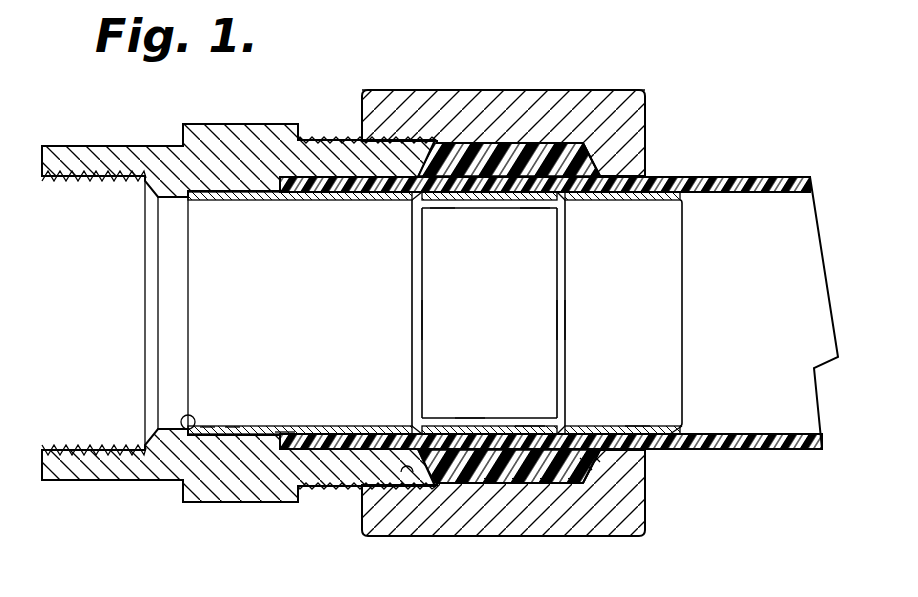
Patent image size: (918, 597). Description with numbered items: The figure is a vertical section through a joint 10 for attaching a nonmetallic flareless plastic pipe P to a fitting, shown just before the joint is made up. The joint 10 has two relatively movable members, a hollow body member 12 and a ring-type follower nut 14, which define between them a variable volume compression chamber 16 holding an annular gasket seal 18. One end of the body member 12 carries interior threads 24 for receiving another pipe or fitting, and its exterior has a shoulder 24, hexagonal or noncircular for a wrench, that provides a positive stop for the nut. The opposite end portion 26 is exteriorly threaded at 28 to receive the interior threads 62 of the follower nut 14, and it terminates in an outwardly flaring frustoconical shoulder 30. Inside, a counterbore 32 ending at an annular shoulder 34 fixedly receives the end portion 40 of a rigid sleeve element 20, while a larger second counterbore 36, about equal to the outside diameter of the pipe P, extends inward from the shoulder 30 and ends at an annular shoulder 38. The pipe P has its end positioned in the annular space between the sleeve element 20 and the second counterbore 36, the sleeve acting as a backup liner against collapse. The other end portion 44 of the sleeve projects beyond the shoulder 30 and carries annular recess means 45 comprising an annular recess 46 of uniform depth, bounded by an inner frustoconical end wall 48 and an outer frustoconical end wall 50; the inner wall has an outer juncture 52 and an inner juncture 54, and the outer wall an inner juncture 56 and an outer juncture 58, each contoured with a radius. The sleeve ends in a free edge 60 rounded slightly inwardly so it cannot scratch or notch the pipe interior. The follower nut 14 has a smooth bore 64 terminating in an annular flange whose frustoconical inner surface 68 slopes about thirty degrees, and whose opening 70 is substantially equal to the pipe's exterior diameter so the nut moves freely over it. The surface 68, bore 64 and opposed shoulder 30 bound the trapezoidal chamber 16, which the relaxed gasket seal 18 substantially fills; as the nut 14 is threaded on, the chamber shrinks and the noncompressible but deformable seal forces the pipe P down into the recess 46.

The joint 10 is at (572, 48).
The hollow body member 12 is at (268, 503).
The follower nut 14 is at (588, 539).
The variable volume compression chamber 16 is at (585, 142).
The annular gasket seal 18 is at (593, 158).
The sleeve element 20 is at (250, 428).
The interior threads / shoulder 24 is at (75, 173).
The end portion 26 is at (331, 140).
The exterior threads 28 is at (345, 488).
The frustoconical shoulder 30 is at (470, 428).
The counterbore 32 is at (208, 428).
The annular shoulder 34 is at (183, 429).
The second counterbore 36 is at (360, 178).
The annular shoulder 38 is at (284, 432).
The end portion 40 is at (232, 428).
The end portion 44 is at (610, 200).
The annular recess means 45 is at (585, 462).
The annular recess 46 is at (528, 428).
The inner frustoconical end wall 48 is at (442, 210).
The outer frustoconical end wall 50 is at (535, 210).
The outer juncture 52 is at (412, 298).
The inner juncture 54 is at (425, 325).
The inner juncture 56 is at (557, 328).
The outer juncture 58 is at (565, 322).
The free edge 60 is at (683, 432).
The interior threads 62 is at (407, 472).
The smooth bore 64 is at (490, 483).
The frustoconical inner surface 68 is at (597, 458).
The opening 70 is at (638, 427).
The plastic pipe P is at (735, 178).